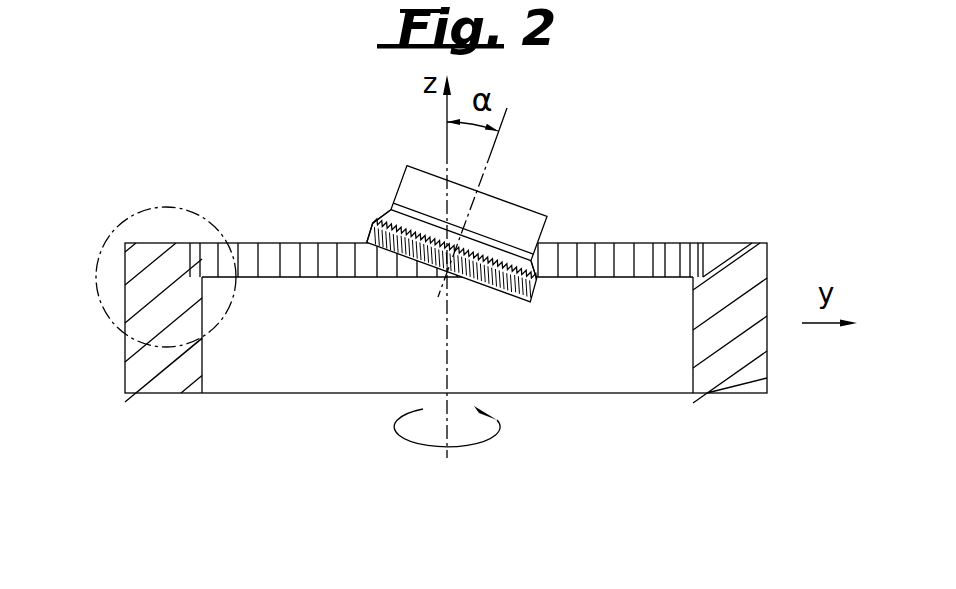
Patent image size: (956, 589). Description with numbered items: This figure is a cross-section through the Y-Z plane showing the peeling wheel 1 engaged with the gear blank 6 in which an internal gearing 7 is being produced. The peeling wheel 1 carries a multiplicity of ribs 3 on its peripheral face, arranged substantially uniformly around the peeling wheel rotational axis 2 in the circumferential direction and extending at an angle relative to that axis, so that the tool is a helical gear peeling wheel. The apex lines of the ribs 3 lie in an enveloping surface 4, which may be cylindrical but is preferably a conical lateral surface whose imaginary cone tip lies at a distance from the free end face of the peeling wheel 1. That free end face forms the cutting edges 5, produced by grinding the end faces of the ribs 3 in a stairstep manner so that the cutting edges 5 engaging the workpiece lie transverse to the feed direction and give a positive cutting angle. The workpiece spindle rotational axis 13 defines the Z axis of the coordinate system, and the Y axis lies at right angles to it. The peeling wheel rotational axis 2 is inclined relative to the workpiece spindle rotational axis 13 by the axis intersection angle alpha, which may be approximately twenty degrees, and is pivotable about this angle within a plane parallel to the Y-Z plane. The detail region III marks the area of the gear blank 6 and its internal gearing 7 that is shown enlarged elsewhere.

The peeling wheel 1 is at (521, 208).
The peeling wheel rotational axis 2 is at (501, 151).
The ribs 3 is at (504, 270).
The enveloping surface 4 is at (366, 237).
The cutting edges 5 is at (364, 241).
The gear blank 6 is at (753, 280).
The internal gearing 7 is at (646, 268).
The workpiece spindle rotational axis 13 is at (447, 348).
The detail region III is at (110, 233).